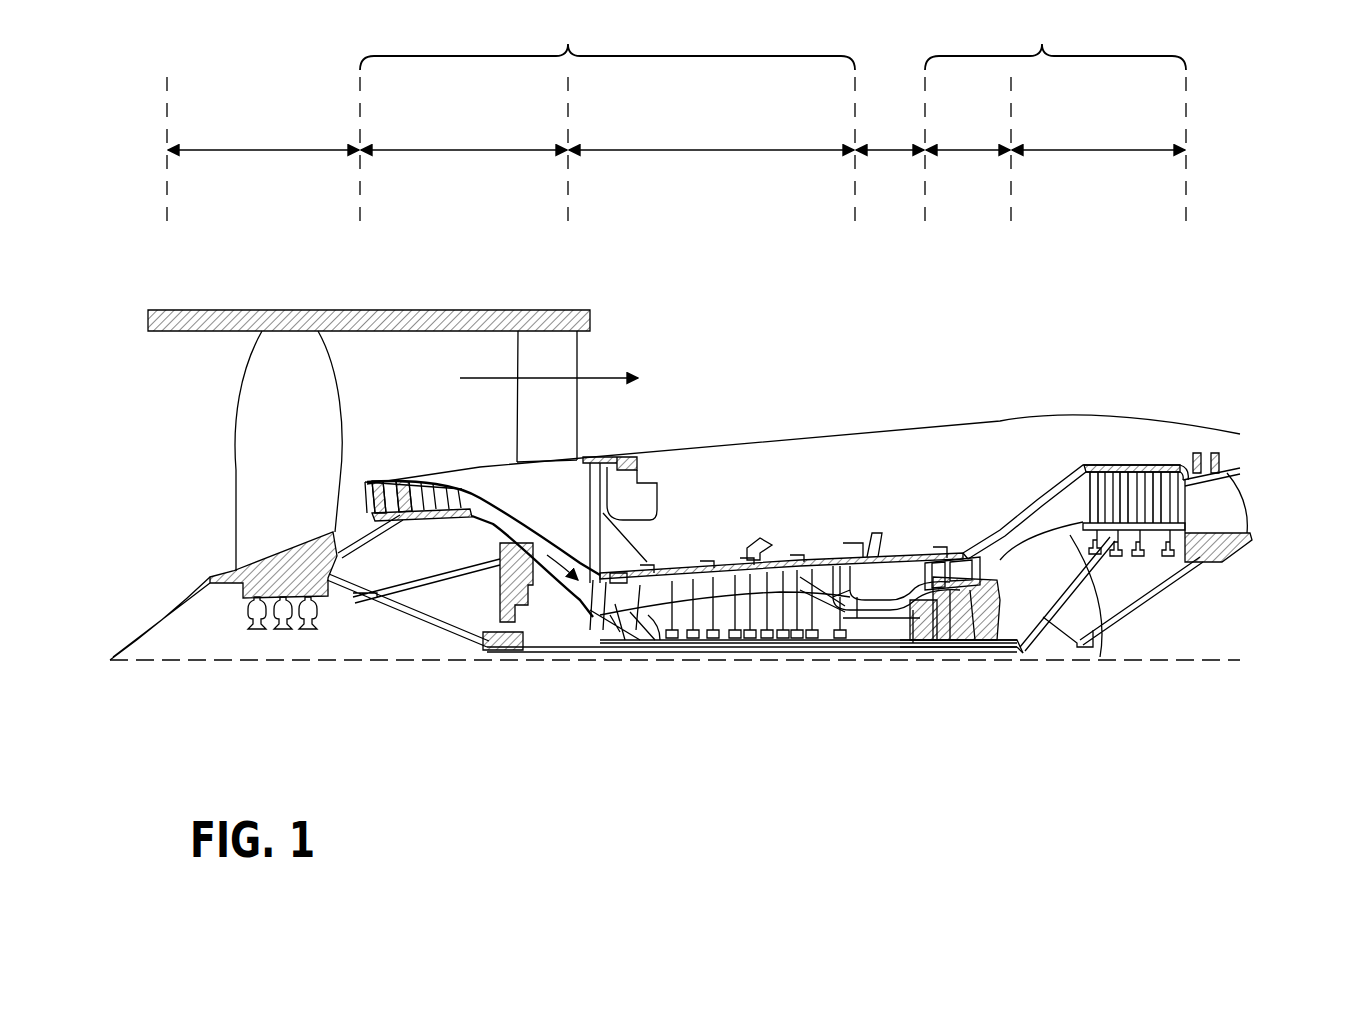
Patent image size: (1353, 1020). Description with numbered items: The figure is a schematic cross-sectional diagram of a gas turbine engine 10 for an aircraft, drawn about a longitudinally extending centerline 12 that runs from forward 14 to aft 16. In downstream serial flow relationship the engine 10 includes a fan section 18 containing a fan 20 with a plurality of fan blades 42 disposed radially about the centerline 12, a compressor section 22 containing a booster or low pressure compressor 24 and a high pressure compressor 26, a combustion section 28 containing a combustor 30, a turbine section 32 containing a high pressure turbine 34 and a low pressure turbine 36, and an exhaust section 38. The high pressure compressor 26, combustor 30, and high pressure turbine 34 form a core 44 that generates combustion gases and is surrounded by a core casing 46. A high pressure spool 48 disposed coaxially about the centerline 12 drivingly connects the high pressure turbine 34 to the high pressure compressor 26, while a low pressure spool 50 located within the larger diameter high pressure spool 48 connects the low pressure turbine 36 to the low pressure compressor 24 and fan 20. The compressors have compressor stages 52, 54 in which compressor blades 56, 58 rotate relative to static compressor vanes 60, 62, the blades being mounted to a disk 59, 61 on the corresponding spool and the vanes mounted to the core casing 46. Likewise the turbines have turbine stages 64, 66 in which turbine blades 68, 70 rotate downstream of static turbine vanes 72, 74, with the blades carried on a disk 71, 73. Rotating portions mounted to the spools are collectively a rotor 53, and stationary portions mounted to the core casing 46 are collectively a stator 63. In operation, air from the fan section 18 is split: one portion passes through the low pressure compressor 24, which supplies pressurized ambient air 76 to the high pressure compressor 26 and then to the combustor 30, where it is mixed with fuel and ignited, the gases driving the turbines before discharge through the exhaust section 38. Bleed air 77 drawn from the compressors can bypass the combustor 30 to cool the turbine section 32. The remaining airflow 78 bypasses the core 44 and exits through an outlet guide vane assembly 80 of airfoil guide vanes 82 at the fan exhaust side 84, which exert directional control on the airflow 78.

The gas turbine engine 10 is at (704, 490).
The centerline 12 is at (263, 663).
The forward 14 is at (116, 437).
The aft 16 is at (1270, 515).
The fan section 18 is at (263, 139).
The fan 20 is at (198, 508).
The compressor section 22 is at (607, 43).
The low pressure compressor 24 is at (464, 139).
The high pressure compressor 26 is at (711, 139).
The combustion section 28 is at (890, 133).
The combustor 30 is at (893, 566).
The turbine section 32 is at (1055, 43).
The high pressure turbine 34 is at (968, 139).
The low pressure turbine 36 is at (1098, 139).
The exhaust section 38 is at (1240, 479).
The fan blades 42 is at (318, 386).
The core 44 is at (840, 468).
The core casing 46 is at (1060, 453).
The high pressure spool 48 is at (868, 622).
The low pressure spool 50 is at (502, 653).
The compressor stages of LP compressor 52 is at (476, 503).
The rotor 53 is at (453, 533).
The compressor stages of HP compressor 54 is at (650, 452).
The LP compressor blades 56 is at (399, 470).
The HP compressor blades 58 is at (645, 600).
The disk 59 is at (392, 522).
The LP compressor vanes 60 is at (377, 481).
The disk 61 is at (642, 634).
The HP compressor vanes 62 is at (625, 590).
The stator 63 is at (617, 632).
The turbine stages of HP turbine 64 is at (951, 519).
The turbine stages of LP turbine 66 is at (1157, 454).
The HP turbine blades 68 is at (944, 560).
The LP turbine blades 70 is at (1174, 464).
The disk 71 is at (929, 632).
The HP turbine vanes 72 is at (914, 560).
The disk 73 is at (1096, 622).
The LP turbine vanes 74 is at (1154, 462).
The pressurized ambient air 76 is at (572, 548).
The bleed air 77 is at (742, 550).
The bypass airflow 78 is at (486, 378).
The outlet guide vane assembly 80 is at (594, 428).
The airfoil guide vanes 82 is at (519, 412).
The fan exhaust side 84 is at (620, 337).